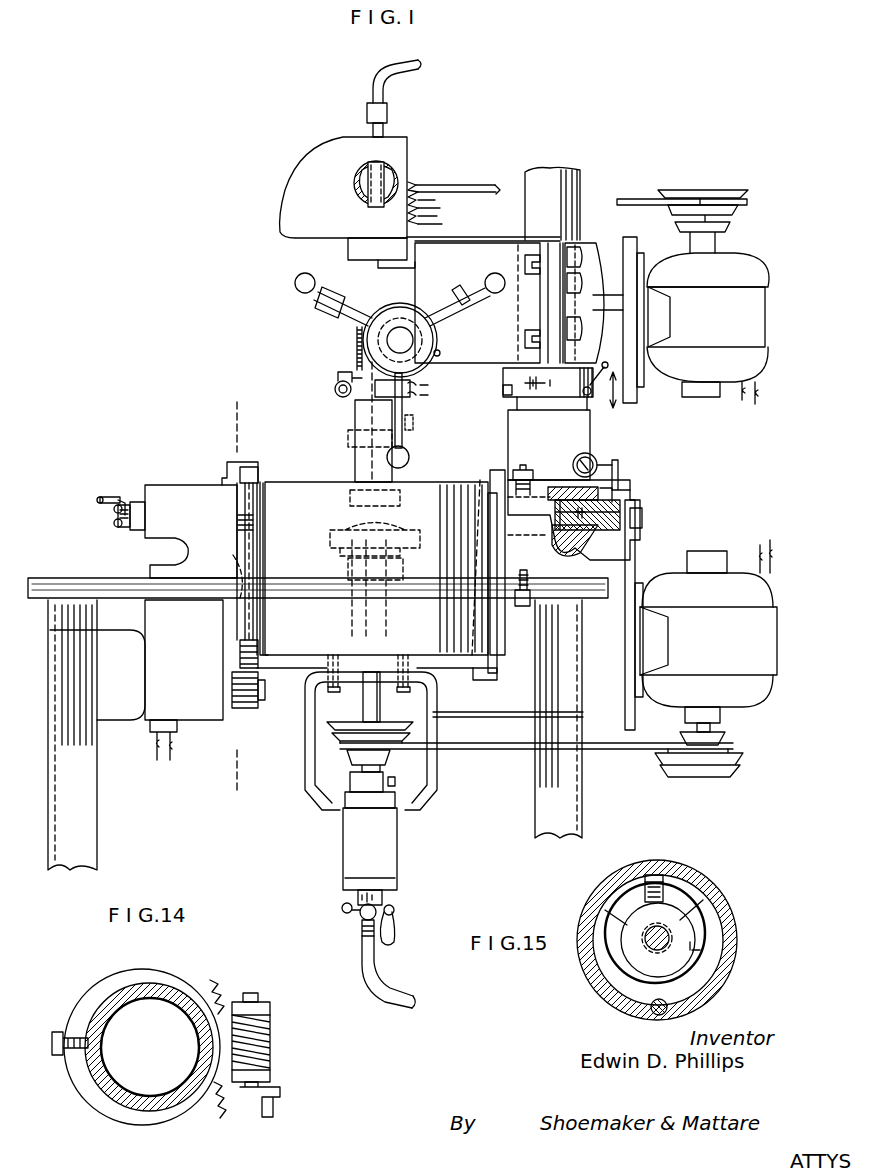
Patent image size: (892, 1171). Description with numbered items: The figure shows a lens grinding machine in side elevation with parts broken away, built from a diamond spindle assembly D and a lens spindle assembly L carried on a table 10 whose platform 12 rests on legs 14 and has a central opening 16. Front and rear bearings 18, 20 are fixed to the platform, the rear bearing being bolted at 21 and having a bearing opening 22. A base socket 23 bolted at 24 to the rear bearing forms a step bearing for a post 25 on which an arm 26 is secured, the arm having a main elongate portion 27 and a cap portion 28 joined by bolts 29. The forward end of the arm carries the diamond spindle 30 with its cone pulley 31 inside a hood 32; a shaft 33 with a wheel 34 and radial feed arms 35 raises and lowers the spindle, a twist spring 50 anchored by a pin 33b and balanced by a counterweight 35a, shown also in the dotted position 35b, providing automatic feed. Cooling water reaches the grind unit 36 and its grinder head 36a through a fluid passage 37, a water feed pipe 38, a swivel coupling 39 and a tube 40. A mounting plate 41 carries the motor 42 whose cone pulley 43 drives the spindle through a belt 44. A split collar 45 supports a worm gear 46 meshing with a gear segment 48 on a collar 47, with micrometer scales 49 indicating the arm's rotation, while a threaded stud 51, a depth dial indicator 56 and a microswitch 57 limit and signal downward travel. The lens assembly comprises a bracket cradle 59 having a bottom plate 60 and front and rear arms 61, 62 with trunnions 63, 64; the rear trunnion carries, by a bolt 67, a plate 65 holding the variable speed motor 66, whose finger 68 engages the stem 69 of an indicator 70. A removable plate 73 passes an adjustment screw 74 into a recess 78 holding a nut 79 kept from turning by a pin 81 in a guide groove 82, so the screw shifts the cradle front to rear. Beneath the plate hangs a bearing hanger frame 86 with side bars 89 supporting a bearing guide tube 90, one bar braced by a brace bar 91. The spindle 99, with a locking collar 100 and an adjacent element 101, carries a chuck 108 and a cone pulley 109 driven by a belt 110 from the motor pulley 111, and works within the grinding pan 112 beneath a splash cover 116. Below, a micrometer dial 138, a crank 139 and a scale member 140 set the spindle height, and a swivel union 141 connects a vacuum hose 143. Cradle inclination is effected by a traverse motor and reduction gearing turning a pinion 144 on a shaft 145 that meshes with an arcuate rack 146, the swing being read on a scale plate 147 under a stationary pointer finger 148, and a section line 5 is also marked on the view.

In FIG. 1, the table 10 is at (84, 575).
In FIG. 1, the top or platform 12 is at (70, 602).
In FIG. 1, the legs 14 is at (92, 827).
In FIG. 1, the opening 16 is at (233, 560).
In FIG. 1, the front bearing 18 is at (178, 487).
In FIG. 15, the front bearing 18 is at (730, 888).
In FIG. 1, the rear bearing 20 is at (564, 479).
In FIG. 1, the bolt 21 is at (525, 604).
In FIG. 1, the bearing opening 22 is at (574, 523).
In FIG. 1, the base socket 23 is at (525, 443).
In FIG. 1, the bolts 24 is at (516, 470).
In FIG. 1, the post or standard 25 is at (570, 183).
In FIG. 14, the post or standard 25 is at (110, 1090).
In FIG. 1, the arm 26 is at (502, 240).
In FIG. 1, the main elongate portion 27 is at (348, 250).
In FIG. 1, the cap portion 28 is at (568, 246).
In FIG. 1, the bolts 29 is at (524, 264).
In FIG. 1, the spindle or arbor 30 is at (355, 415).
In FIG. 1, the cone pulley unit 31 is at (413, 183).
In FIG. 1, the hood 32 is at (322, 163).
In FIG. 1, the shaft 33 is at (388, 345).
In FIG. 1, the screw, pin or the like 33b is at (439, 357).
In FIG. 1, the wheel 34 is at (440, 341).
In FIG. 1, the radial feed arms 35 is at (437, 318).
In FIG. 1, the counterweight 35a is at (345, 318).
In FIG. 1, the dotted-outline position of counterweight 35b is at (460, 288).
In FIG. 1, the diamond grind unit 36 is at (345, 466).
In FIG. 1, the diamond grinder or head 36a is at (350, 504).
In FIG. 1, the fluid passage 37 is at (366, 205).
In FIG. 1, the water feed pipe 38 is at (386, 131).
In FIG. 1, the swivel coupling 39 is at (366, 113).
In FIG. 1, the tube or pipe 40 is at (420, 64).
In FIG. 1, the mounting plate 41 is at (636, 362).
In FIG. 1, the electric motor 42 is at (758, 326).
In FIG. 1, the cone pulley 43 is at (725, 192).
In FIG. 1, the drive belt 44 is at (645, 200).
In FIG. 1, the split collar 45 is at (510, 410).
In FIG. 1, the worm gear 46 is at (632, 388).
In FIG. 14, the worm gear 46 is at (272, 1042).
In FIG. 1, the ring or collar 47 is at (525, 372).
In FIG. 14, the ring or collar 47 is at (112, 975).
In FIG. 1, the gear segment 48 is at (583, 378).
In FIG. 14, the gear segment 48 is at (222, 993).
In FIG. 1, the micrometer scales 49 is at (552, 400).
In FIG. 1, the coil or twist spring 50 is at (390, 293).
In FIG. 1, the threaded stud 51 is at (357, 340).
In FIG. 1, the depth dial indicator 56 is at (334, 392).
In FIG. 1, the microswitch 57 is at (418, 398).
In FIG. 1, the bracket cradle 59 is at (242, 622).
In FIG. 1, the bottom part or plate 60 is at (428, 660).
In FIG. 1, the front arm 61 is at (268, 636).
In FIG. 1, the rear arm 62 is at (496, 636).
In FIG. 1, the front trunnion 63 is at (240, 513).
In FIG. 1, the rear trunnion 64 is at (500, 520).
In FIG. 1, the lens spindle motor mounting plate 65 is at (630, 572).
In FIG. 1, the variable speed lens spindle motor 66 is at (755, 685).
In FIG. 1, the bolt 67 is at (644, 516).
In FIG. 1, the upstanding plate or finger 68 is at (620, 477).
In FIG. 1, the stem 69 is at (618, 490).
In FIG. 1, the indicator 70 is at (600, 460).
In FIG. 1, the removable plate 73 is at (121, 494).
In FIG. 15, the adjustment screw 74 is at (652, 950).
In FIG. 15, the recess 78 is at (692, 950).
In FIG. 15, the cylindrical nut 79 is at (700, 965).
In FIG. 15, the pin 81 is at (645, 895).
In FIG. 15, the guide groove 82 is at (665, 878).
In FIG. 1, the bearing hanger frame 86 is at (321, 828).
In FIG. 1, the side bars 89 is at (306, 790).
In FIG. 1, the bearing guide tube 90 is at (390, 854).
In FIG. 1, the brace bar 91 is at (508, 718).
In FIG. 1, the spindle 99 is at (378, 708).
In FIG. 1, the locking collar 100 is at (384, 792).
In FIG. 1, the screw 101 is at (396, 780).
In FIG. 1, the chuck 108 is at (330, 545).
In FIG. 1, the cone pulley 109 is at (330, 724).
In FIG. 1, the drive belt 110 is at (610, 750).
In FIG. 1, the cone pulley 111 is at (715, 777).
In FIG. 1, the grinding pan 112 is at (430, 490).
In FIG. 1, the splash cover 116 is at (348, 570).
In FIG. 1, the micrometer dial 138 is at (345, 910).
In FIG. 1, the crank 139 is at (395, 912).
In FIG. 1, the micrometer scale varying member 140 is at (356, 892).
In FIG. 1, the swivel pipe coupling or union 141 is at (360, 926).
In FIG. 1, the air or vacuum hose 143 is at (397, 1010).
In FIG. 1, the pinion gear 144 is at (232, 690).
In FIG. 1, the shaft 145 is at (268, 700).
In FIG. 1, the arcuate rack gear 146 is at (240, 660).
In FIG. 1, the arcuate scale plate 147 is at (258, 470).
In FIG. 1, the stationary pointer finger 148 is at (230, 463).
In FIG. 1, the diamond spindle assembly D is at (284, 191).
In FIG. 1, the lens spindle assembly L is at (302, 752).
In FIG. 1, the section line 5 is at (245, 761).